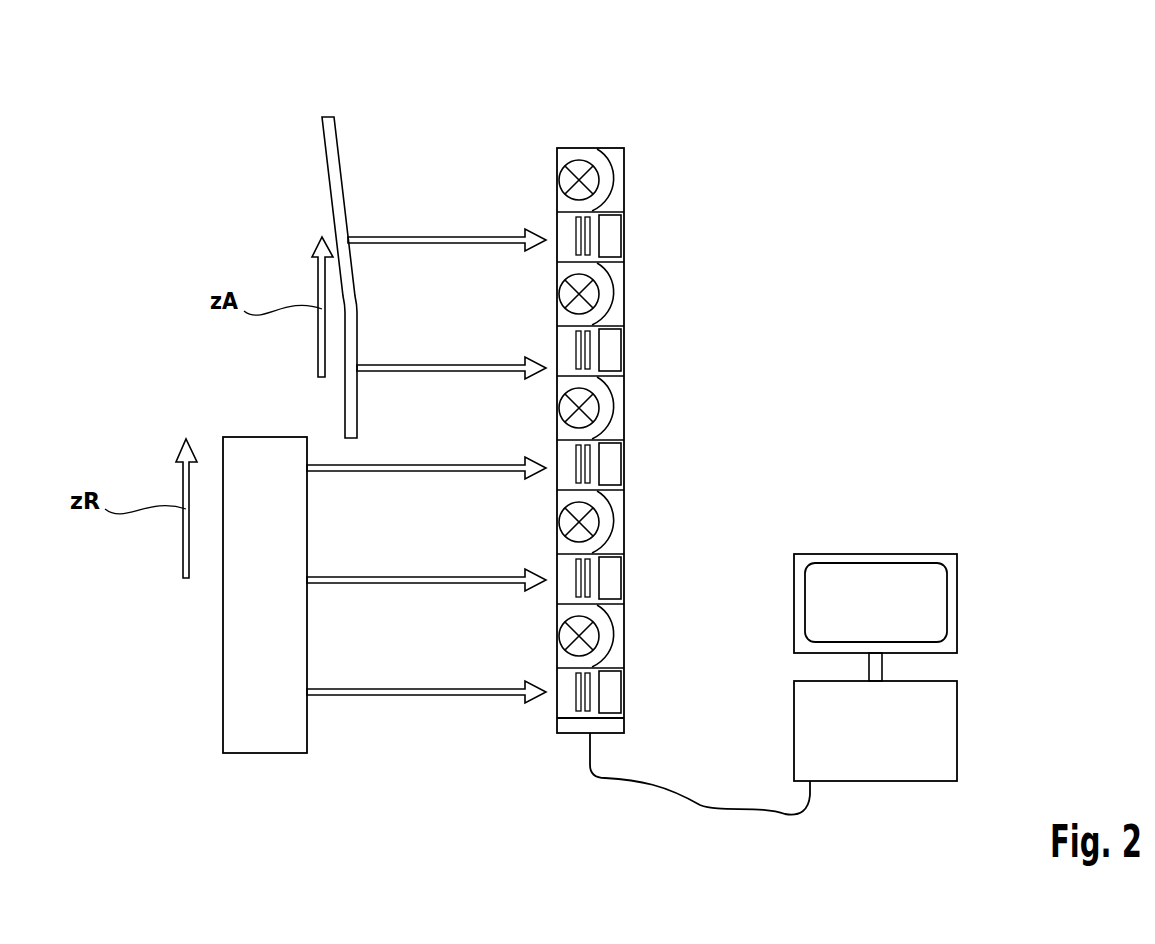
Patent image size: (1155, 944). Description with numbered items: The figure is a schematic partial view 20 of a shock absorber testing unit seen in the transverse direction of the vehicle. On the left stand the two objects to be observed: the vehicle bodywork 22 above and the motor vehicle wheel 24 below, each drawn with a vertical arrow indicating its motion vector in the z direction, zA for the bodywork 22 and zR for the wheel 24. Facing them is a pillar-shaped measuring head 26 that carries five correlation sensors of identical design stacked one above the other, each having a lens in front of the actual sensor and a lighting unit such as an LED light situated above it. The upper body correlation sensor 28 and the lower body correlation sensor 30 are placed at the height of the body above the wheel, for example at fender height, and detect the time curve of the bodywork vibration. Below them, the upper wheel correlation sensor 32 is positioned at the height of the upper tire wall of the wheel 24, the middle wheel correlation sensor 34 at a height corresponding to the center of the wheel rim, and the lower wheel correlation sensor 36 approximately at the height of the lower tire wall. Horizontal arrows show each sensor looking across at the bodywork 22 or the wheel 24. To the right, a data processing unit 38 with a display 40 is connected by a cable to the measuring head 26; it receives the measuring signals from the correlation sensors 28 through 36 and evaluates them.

The schematic partial view 20 is at (362, 110).
The vehicle bodywork 22 is at (340, 191).
The motor vehicle wheel 24 is at (244, 678).
The pillar-shaped measuring head 26 is at (566, 134).
The upper body correlation sensor 28 is at (614, 237).
The lower body correlation sensor 30 is at (614, 351).
The upper wheel correlation sensor 32 is at (614, 465).
The middle wheel correlation sensor 34 is at (614, 579).
The lower wheel correlation sensor 36 is at (614, 693).
The data processing unit 38 is at (948, 729).
The display 40 is at (953, 604).